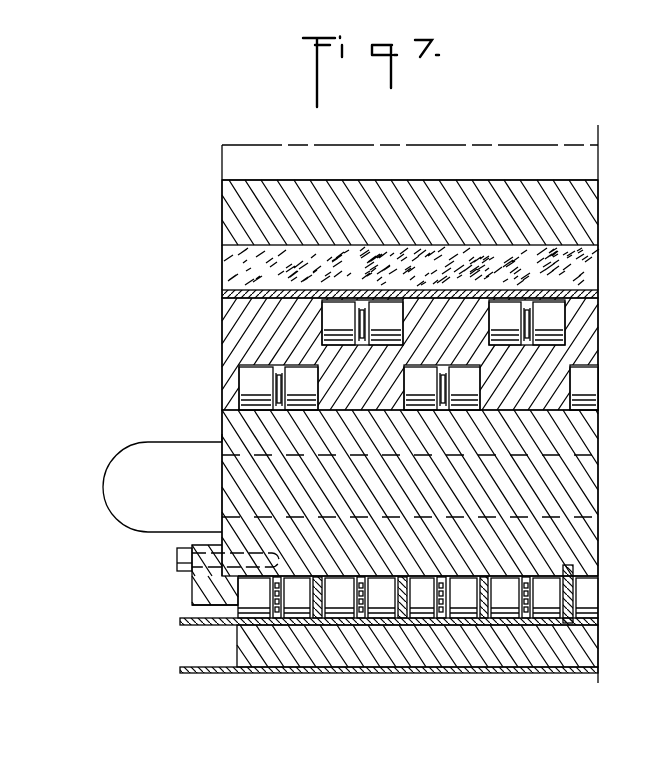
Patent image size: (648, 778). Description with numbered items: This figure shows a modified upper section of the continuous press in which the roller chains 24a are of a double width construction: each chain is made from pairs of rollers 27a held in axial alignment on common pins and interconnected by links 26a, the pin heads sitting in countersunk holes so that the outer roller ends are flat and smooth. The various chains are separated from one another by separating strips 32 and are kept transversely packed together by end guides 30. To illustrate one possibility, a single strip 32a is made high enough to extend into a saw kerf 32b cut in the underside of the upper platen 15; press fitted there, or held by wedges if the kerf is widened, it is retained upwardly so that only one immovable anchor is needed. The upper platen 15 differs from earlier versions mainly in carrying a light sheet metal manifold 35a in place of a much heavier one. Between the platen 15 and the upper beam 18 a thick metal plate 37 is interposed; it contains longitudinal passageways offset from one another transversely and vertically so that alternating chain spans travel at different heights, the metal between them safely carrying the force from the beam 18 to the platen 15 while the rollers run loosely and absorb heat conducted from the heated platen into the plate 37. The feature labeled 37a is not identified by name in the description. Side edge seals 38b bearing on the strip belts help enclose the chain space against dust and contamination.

The upper platen 15 is at (237, 425).
The upper beam 18 is at (580, 216).
The roller chains 24a is at (256, 632).
The links 26a is at (272, 604).
The rollers 27a is at (293, 610).
The end guides 30 is at (191, 579).
The separating strips 32 is at (482, 622).
The strip 32a is at (567, 624).
The saw kerf 32b is at (563, 570).
The sheet metal manifold 35a is at (125, 508).
The metal plate 37 is at (238, 312).
The liner layer 37a is at (322, 357).
The side edge seals 38b is at (197, 614).